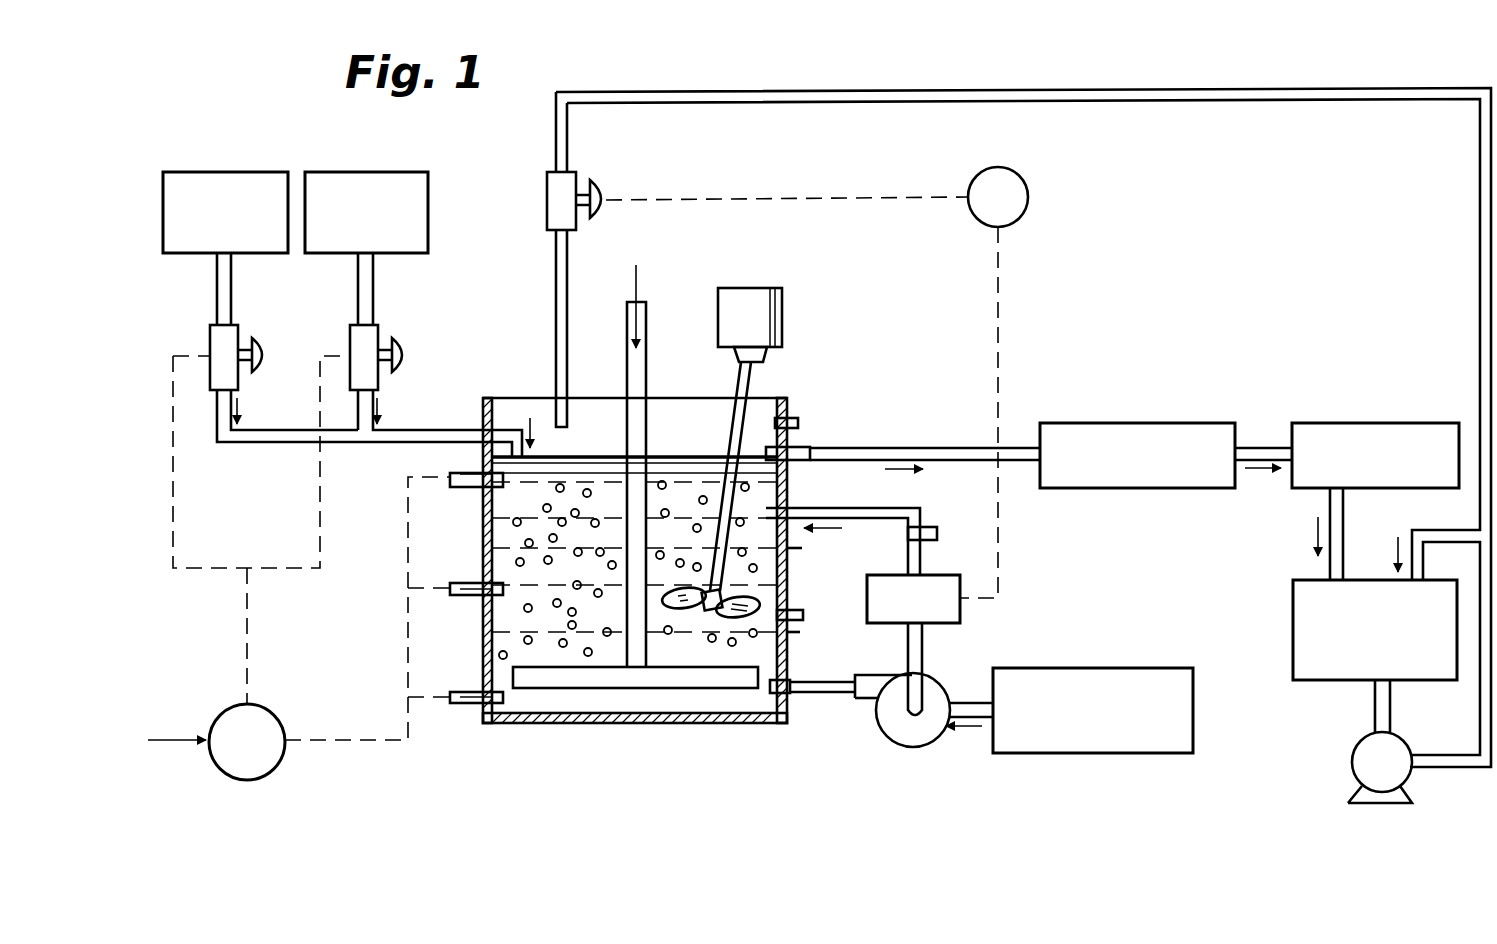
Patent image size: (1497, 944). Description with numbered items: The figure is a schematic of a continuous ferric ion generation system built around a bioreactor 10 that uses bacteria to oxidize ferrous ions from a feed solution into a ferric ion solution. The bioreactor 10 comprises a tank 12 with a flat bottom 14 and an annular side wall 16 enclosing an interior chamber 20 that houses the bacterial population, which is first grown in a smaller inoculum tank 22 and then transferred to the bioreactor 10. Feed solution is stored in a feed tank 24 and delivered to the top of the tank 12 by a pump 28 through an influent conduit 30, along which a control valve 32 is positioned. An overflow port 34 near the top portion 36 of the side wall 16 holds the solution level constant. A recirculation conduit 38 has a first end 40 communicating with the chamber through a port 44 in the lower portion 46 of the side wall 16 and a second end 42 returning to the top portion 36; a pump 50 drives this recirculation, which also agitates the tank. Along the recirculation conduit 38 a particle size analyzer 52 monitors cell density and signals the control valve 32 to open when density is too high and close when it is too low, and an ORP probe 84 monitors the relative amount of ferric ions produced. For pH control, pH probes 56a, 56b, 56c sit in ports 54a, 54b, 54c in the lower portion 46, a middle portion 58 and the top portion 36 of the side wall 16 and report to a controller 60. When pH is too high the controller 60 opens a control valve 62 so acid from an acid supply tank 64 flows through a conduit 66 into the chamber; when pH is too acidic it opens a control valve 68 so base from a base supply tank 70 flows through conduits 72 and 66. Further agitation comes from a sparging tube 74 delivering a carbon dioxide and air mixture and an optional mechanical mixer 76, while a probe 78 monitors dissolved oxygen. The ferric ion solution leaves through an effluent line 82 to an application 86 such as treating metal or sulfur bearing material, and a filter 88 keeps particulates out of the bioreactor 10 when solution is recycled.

The bioreactor 10 is at (606, 595).
The tank 12 is at (630, 727).
The flat bottom 14 is at (678, 727).
The annular side wall 16 is at (790, 634).
The interior chamber 20 is at (715, 688).
The inoculum tank 22 is at (1095, 668).
The feed tank 24 is at (1300, 597).
The pump 28 is at (1366, 751).
The influent conduit 30 is at (1062, 92).
The control valve 32 is at (557, 205).
The overflow port 34 is at (795, 416).
The top portion 36 is at (786, 446).
The recirculation conduit 38 is at (925, 566).
The first end 40 is at (830, 682).
The second end 42 is at (853, 516).
The port 44 is at (790, 695).
The lower portion 46 is at (483, 652).
The pump 50 is at (916, 736).
The particle size analyzer 52 is at (953, 613).
The port 54a is at (482, 708).
The port 54b is at (482, 596).
The port 54c is at (468, 490).
The pH probe 56a is at (460, 690).
The pH probe 56b is at (466, 583).
The pH probe 56c is at (470, 470).
The middle portion 58 is at (802, 548).
The controller 60 is at (256, 762).
The control valve 62 is at (232, 340).
The acid supply tank 64 is at (243, 158).
The conduit 66 is at (292, 445).
The control valve 68 is at (372, 340).
The base supply tank 70 is at (396, 158).
The conduit 72 is at (360, 420).
The sparging tube 74 is at (637, 388).
The mechanical mixer 76 is at (758, 300).
The probe 78 is at (798, 608).
The effluent line 82 is at (952, 460).
The ORP probe 84 is at (928, 530).
The application 86 is at (1148, 430).
The filter 88 is at (1365, 428).